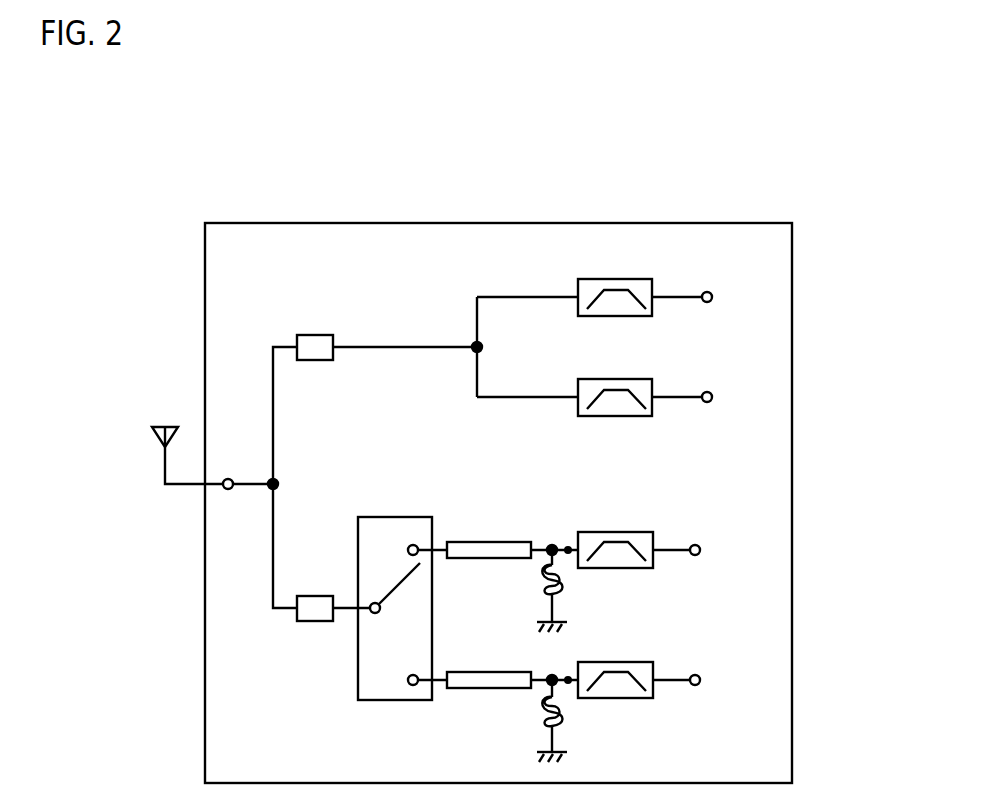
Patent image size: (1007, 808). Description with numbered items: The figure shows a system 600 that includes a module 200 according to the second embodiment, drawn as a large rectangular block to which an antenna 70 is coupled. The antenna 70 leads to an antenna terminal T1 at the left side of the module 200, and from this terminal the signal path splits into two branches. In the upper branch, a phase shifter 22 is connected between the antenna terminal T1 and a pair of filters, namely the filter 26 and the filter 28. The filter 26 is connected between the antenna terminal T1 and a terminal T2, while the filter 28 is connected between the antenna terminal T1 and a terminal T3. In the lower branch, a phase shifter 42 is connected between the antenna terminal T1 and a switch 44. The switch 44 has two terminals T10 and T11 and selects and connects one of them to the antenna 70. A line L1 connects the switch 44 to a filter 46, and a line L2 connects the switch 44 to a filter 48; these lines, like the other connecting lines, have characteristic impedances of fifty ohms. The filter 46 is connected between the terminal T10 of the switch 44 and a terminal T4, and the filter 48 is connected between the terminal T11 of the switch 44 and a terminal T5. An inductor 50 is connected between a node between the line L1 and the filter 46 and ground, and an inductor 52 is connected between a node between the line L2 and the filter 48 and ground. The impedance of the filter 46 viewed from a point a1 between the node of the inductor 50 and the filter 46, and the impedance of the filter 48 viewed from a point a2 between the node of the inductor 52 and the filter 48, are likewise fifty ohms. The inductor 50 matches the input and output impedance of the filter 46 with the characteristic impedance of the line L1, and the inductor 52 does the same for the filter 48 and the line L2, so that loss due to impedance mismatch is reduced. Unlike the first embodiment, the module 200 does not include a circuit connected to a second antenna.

The module 200 is at (490, 223).
The system 600 is at (749, 187).
The antenna 70 is at (170, 427).
The antenna terminal T1 is at (228, 478).
The phase shifter 22 is at (320, 335).
The filter 26 is at (636, 279).
The filter 28 is at (636, 379).
The terminal T2 is at (712, 297).
The terminal T3 is at (712, 397).
The phase shifter 42 is at (320, 596).
The switch 44 is at (392, 700).
The terminal T10 is at (405, 536).
The terminal T11 is at (405, 667).
The line L1 is at (488, 542).
The line L2 is at (488, 672).
The point a1 is at (568, 546).
The point a2 is at (568, 676).
The filter 46 is at (637, 532).
The filter 48 is at (637, 662).
The inductor 50 is at (565, 585).
The inductor 52 is at (565, 717).
The terminal T4 is at (700, 550).
The terminal T5 is at (700, 680).